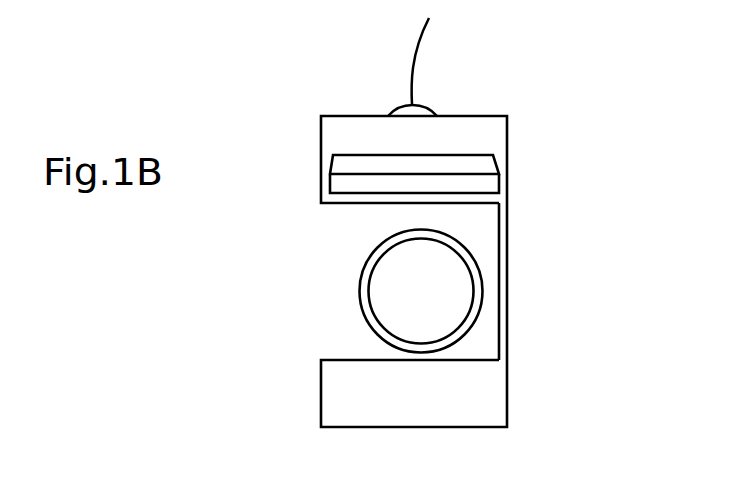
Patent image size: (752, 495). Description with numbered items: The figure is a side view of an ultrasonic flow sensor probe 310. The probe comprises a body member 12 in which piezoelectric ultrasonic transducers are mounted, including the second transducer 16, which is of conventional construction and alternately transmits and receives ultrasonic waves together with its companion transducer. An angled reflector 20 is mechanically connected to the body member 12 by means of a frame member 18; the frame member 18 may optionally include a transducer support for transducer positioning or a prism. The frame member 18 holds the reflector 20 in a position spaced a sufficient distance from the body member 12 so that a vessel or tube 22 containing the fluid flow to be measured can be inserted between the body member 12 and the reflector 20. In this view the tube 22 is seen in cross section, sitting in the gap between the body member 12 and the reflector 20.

The body member 12 is at (507, 145).
The second piezoelectric ultrasonic transducer 16 is at (499, 181).
The frame member 18 is at (507, 312).
The angled reflector 20 is at (507, 407).
The vessel or tube 22 is at (463, 329).
The ultrasonic flow sensor probe 310 is at (582, 259).